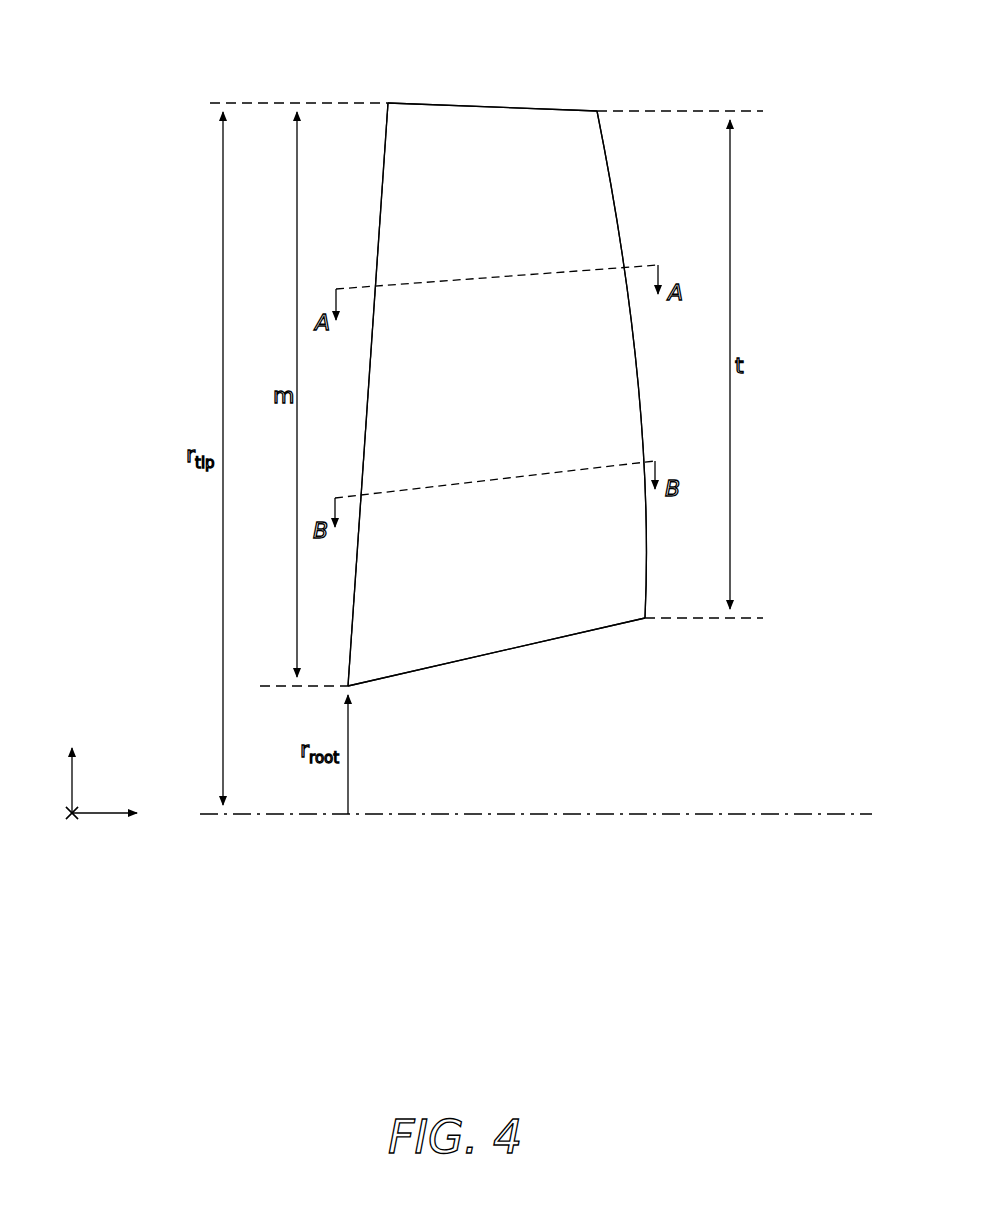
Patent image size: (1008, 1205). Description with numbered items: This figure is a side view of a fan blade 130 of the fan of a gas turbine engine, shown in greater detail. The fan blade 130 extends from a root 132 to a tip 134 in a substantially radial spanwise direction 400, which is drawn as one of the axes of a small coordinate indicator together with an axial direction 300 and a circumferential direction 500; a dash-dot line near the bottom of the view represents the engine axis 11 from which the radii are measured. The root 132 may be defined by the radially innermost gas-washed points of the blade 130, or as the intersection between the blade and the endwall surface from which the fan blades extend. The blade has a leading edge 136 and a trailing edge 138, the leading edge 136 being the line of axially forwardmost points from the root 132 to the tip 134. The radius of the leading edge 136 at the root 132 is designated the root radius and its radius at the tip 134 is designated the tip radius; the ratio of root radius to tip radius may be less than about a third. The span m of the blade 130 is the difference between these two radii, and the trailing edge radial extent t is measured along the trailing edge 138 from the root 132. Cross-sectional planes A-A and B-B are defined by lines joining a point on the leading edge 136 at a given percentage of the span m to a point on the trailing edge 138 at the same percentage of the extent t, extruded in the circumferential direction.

The engine central axis 11 is at (752, 814).
The fan blade 130 is at (592, 160).
The root 132 is at (612, 628).
The tip 134 is at (537, 108).
The leading edge 136 is at (388, 143).
The trailing edge 138 is at (633, 328).
The axial direction 300 is at (128, 813).
The radial spanwise direction 400 is at (76, 767).
The circumferential direction 500 is at (71, 829).